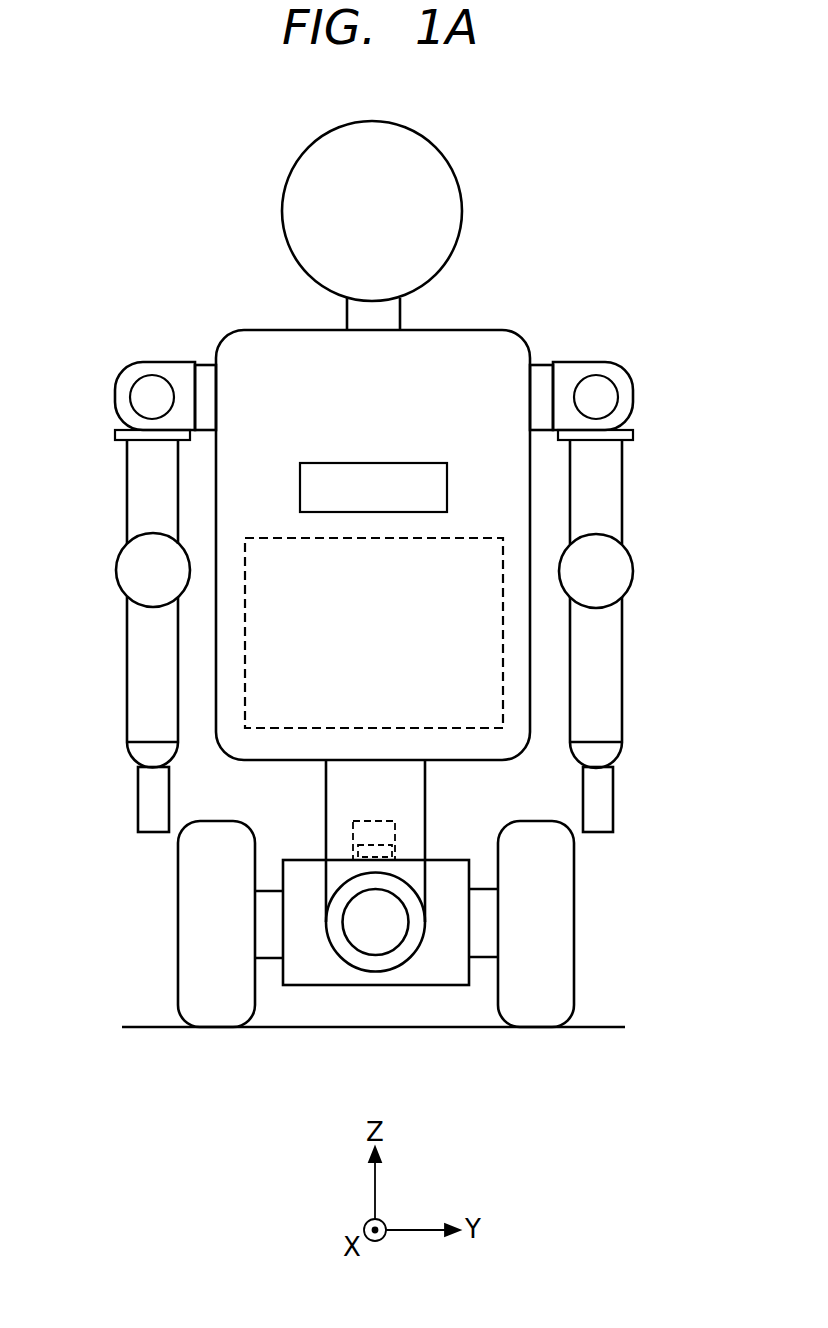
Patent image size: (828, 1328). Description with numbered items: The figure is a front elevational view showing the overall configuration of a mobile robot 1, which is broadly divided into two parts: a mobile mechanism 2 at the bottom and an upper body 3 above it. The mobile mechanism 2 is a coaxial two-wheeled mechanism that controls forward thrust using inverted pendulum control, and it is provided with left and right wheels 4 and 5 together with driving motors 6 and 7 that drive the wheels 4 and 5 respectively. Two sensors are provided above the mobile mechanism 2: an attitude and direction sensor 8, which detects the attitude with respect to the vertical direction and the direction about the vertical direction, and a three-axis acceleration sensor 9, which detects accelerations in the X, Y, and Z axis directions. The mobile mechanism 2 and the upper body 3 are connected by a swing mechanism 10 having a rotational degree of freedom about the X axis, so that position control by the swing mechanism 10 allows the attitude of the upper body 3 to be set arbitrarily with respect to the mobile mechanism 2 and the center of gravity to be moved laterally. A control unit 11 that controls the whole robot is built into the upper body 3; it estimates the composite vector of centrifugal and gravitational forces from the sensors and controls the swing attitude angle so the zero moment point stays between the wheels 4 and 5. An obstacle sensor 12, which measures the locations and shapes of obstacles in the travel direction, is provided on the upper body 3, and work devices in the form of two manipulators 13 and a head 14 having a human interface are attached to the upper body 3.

The mobile robot 1 is at (288, 334).
The mobile mechanism 2 is at (312, 970).
The upper body 3 is at (480, 331).
The left wheel 4 is at (187, 918).
The right wheel 5 is at (563, 928).
The driving motor 6 is at (267, 947).
The driving motor 7 is at (483, 947).
The attitude and direction sensor 8 is at (366, 822).
The acceleration sensor 9 is at (397, 851).
The swing mechanism 10 is at (383, 940).
The control unit 11 is at (505, 637).
The obstacle sensor 12 is at (448, 492).
The manipulators 13 is at (173, 364).
The head 14 is at (300, 153).